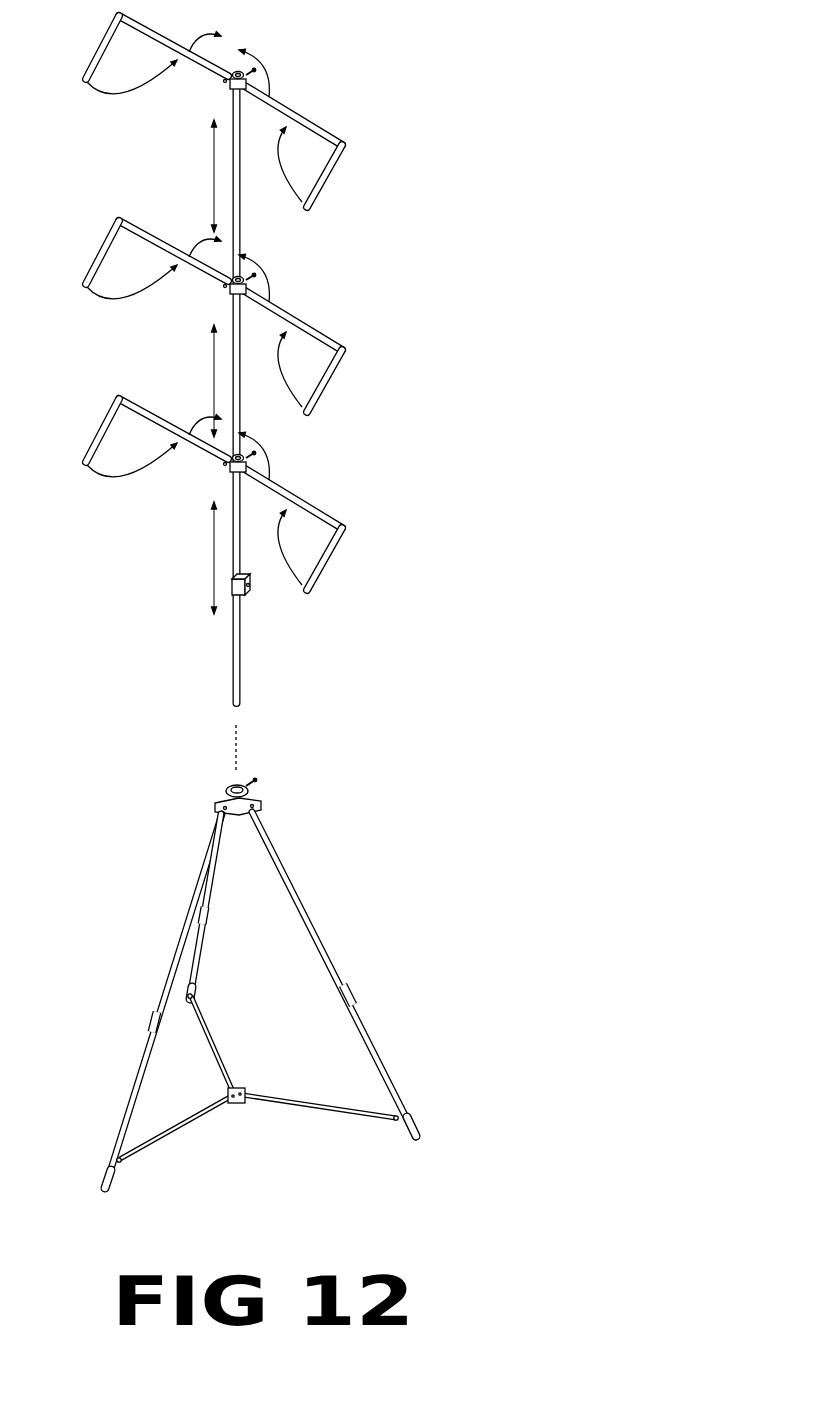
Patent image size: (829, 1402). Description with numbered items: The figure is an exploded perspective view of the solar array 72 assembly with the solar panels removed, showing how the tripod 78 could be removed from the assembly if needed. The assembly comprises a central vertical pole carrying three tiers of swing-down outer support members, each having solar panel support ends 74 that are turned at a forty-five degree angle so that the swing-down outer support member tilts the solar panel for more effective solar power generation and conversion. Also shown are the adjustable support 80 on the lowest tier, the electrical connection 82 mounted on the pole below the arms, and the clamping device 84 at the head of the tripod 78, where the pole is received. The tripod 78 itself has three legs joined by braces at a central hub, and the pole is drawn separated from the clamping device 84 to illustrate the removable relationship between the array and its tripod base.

The solar array 72 is at (317, 127).
The solar panel support ends 74 is at (326, 175).
The tripod 78 is at (282, 857).
The adjustable support 80 is at (193, 463).
The electrical connection 82 is at (248, 588).
The clamping device 84 is at (248, 780).